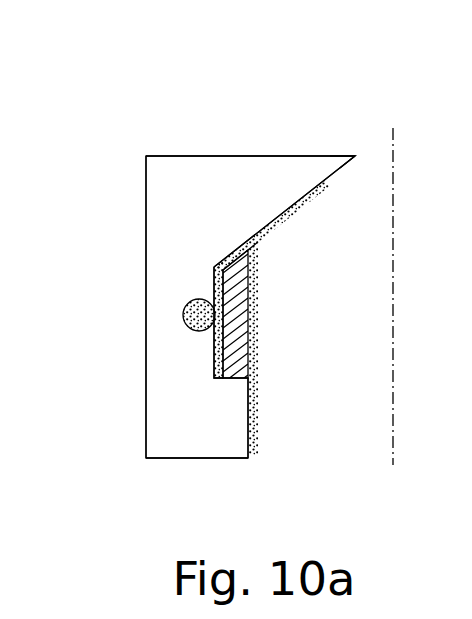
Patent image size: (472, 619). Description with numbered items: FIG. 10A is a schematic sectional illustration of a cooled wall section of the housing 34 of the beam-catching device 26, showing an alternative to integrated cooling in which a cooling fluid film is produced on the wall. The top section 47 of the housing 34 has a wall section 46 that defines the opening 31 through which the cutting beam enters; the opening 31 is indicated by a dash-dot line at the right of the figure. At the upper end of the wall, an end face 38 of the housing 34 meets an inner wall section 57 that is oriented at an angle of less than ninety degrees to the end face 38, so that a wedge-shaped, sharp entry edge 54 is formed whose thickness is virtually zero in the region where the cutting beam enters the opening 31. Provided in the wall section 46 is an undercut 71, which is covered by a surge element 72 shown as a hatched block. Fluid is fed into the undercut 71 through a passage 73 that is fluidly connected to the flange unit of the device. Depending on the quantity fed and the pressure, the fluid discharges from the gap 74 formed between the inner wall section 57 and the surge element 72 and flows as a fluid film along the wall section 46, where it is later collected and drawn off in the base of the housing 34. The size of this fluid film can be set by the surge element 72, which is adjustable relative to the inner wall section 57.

The beam-catching device 26 is at (94, 324).
The opening 31 is at (373, 146).
The housing 34 is at (134, 233).
The end face 38 is at (217, 140).
The wall section 46 is at (264, 418).
The top section 47 is at (198, 447).
The entry edge 54 is at (344, 135).
The inner wall section 57 is at (337, 171).
The undercut 71 is at (201, 269).
The surge element 72 is at (257, 343).
The passage 73 is at (188, 327).
The gap 74 is at (268, 245).